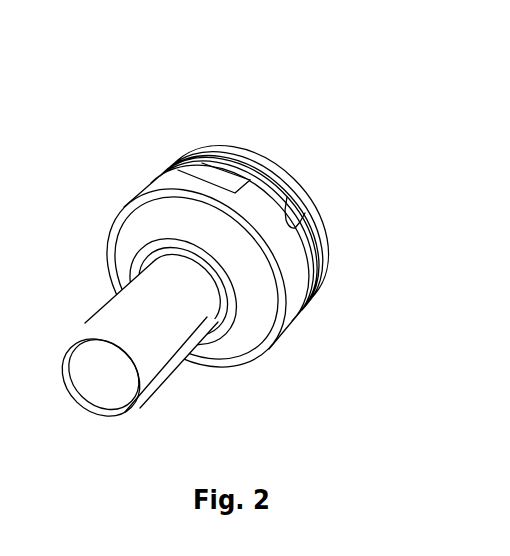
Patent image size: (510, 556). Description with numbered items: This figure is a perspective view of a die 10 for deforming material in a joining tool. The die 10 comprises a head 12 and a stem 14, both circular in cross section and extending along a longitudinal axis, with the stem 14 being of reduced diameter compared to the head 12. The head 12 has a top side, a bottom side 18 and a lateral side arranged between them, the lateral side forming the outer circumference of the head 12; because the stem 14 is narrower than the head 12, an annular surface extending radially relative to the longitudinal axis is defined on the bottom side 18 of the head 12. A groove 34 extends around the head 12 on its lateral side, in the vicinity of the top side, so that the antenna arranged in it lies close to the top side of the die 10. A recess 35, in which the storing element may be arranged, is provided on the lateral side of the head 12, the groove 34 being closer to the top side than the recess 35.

The die 10 is at (342, 52).
The head 12 is at (293, 310).
The stem 14 is at (143, 353).
The bottom side 18 is at (130, 240).
The groove 34 is at (281, 190).
The recess 35 is at (293, 215).